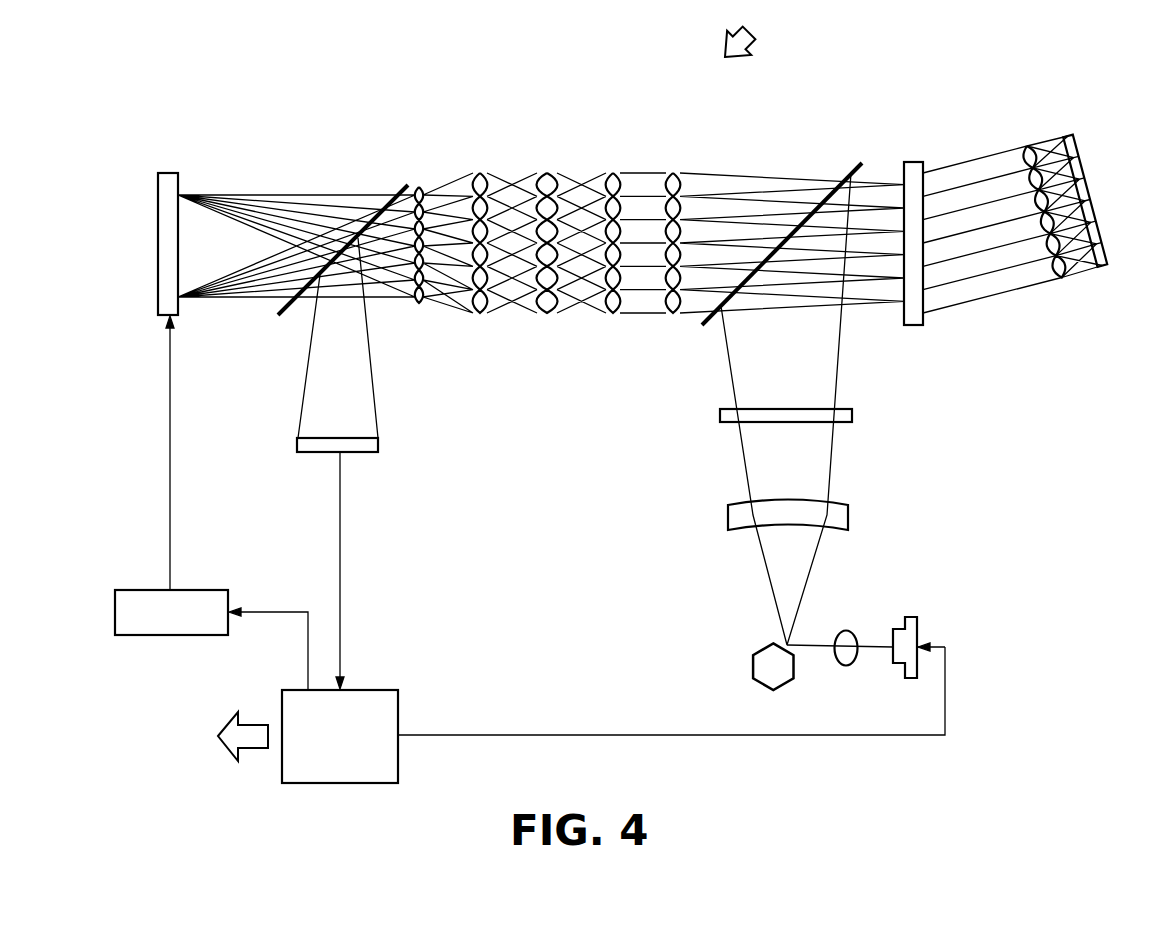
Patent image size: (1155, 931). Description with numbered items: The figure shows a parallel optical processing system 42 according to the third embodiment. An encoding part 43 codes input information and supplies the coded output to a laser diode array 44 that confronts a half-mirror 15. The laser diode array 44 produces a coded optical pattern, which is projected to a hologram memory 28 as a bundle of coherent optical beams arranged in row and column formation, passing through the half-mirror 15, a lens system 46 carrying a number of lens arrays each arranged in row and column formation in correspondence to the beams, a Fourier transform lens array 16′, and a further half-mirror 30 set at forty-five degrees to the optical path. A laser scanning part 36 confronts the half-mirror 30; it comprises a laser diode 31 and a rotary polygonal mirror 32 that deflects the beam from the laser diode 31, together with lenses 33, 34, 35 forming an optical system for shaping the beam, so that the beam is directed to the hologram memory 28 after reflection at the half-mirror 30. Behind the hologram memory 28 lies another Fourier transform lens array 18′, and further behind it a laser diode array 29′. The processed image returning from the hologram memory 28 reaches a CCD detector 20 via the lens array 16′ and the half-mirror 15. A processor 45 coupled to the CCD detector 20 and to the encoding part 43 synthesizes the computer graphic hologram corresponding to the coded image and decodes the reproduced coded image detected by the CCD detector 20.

The half-mirror 15 is at (404, 187).
The lens array 16′ is at (673, 173).
The lens array 18′ is at (1027, 146).
The CCD detector 20 is at (374, 452).
The hologram memory 28 is at (912, 162).
The laser diode array 29′ is at (1070, 136).
The half-mirror 30 is at (860, 163).
The laser diode 31 is at (913, 617).
The rotary polygonal mirror 32 is at (753, 660).
The lens 33 is at (847, 631).
The lens 34 is at (728, 514).
The lens 35 is at (720, 413).
The laser scanning part 36 is at (907, 519).
The parallel optical processing system 42 is at (763, 31).
The encoding part 43 is at (145, 590).
The laser diode array 44 is at (172, 173).
The processor 45 is at (383, 690).
The lens system 46 is at (541, 140).